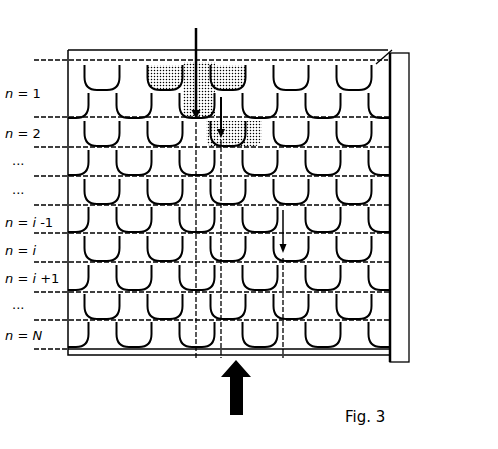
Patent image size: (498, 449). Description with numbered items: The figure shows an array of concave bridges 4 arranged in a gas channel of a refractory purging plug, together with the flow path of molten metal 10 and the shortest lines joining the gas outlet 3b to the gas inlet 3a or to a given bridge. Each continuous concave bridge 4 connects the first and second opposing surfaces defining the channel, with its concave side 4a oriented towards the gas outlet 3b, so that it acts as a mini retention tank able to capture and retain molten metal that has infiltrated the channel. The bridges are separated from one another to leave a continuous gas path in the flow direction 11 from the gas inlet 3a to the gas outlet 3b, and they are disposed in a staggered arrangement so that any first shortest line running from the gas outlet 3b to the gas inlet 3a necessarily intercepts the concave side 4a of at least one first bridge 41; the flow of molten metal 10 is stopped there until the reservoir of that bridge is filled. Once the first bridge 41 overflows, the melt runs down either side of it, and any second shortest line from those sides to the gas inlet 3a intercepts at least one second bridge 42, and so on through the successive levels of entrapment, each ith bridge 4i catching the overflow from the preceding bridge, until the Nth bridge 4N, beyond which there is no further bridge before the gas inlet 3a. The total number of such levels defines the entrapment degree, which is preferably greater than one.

The gas inlet 3a is at (108, 402).
The gas outlet 3b is at (110, 49).
The concave bridges 4 is at (386, 58).
The concave side 4a is at (356, 80).
The flow of molten metal 10 is at (228, 71).
The flow direction of the gas 11 is at (245, 387).
The first bridge 41 is at (178, 97).
The second bridge 42 is at (262, 133).
The ith bridge 4i is at (298, 249).
The Nth bridge 4N is at (342, 328).